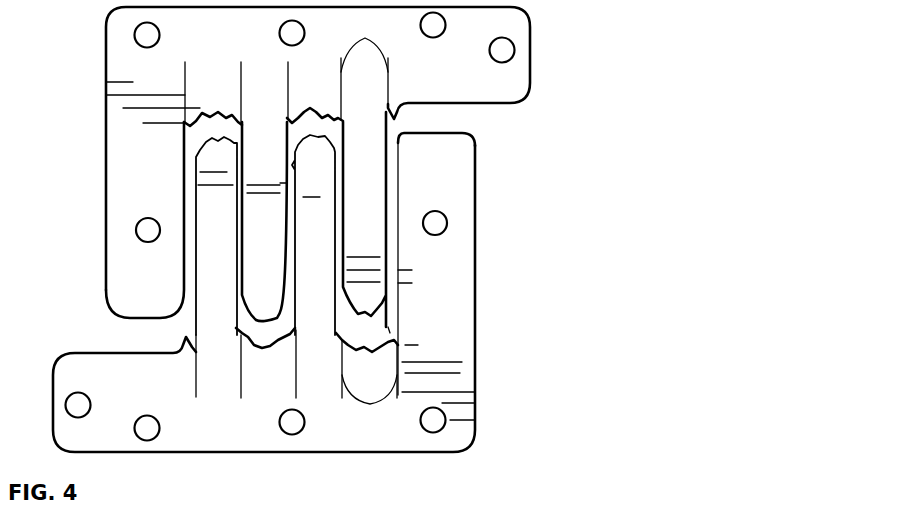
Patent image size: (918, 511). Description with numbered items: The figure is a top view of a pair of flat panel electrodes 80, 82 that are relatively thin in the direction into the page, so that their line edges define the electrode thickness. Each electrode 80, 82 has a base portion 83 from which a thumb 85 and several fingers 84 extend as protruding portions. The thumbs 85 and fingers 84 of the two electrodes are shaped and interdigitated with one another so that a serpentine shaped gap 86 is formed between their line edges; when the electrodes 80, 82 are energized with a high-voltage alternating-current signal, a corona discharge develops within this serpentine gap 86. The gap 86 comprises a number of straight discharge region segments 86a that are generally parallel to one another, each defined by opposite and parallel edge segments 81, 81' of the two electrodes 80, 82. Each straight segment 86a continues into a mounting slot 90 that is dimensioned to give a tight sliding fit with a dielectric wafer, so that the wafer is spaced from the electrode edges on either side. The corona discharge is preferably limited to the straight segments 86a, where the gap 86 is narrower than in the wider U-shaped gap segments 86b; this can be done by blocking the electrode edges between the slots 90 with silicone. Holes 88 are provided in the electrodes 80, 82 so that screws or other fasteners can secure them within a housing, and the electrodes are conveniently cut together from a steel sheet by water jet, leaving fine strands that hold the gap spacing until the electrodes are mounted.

The flat panel electrode 80 is at (530, 33).
The flat panel electrode 82 is at (475, 393).
The edge segment 81 is at (214, 219).
The edge segment 81' is at (377, 261).
The base portion 83 is at (254, 39).
The finger 84 is at (230, 239).
The thumb 85 is at (159, 169).
The serpentine shaped gap 86 is at (190, 268).
The straight discharge region segment 86a is at (190, 238).
The U-shaped gap segment 86b is at (323, 123).
The hole 88 is at (134, 34).
The mounting slot 90 is at (368, 36).